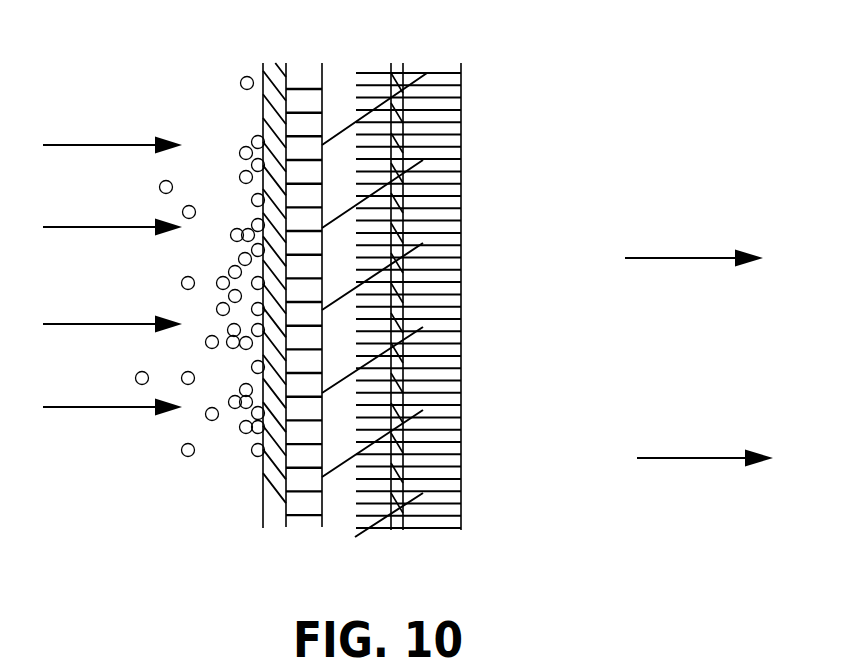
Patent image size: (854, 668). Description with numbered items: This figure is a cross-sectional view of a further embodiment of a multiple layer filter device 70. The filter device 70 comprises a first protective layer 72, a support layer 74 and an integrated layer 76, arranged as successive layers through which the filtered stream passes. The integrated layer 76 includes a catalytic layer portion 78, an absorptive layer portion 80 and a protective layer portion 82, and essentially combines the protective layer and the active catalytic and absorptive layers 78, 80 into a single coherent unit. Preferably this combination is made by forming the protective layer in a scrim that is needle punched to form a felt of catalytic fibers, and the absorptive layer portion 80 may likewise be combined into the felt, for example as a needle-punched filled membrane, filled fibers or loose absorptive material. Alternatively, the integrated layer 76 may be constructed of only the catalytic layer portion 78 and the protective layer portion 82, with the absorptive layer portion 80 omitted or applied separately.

The filter device 70 is at (420, 47).
The first protective layer 72 is at (280, 85).
The support layer 74 is at (298, 100).
The integrated layer 76 is at (467, 557).
The catalytic layer portion 78 is at (333, 482).
The absorptive layer portion 80 is at (393, 500).
The protective layer portion 82 is at (447, 441).